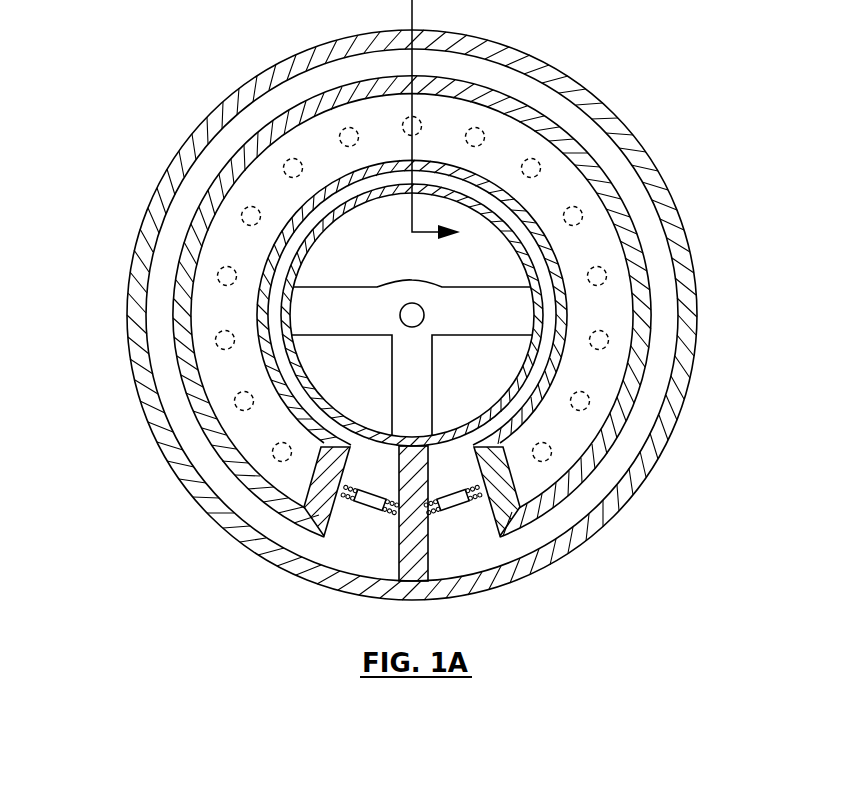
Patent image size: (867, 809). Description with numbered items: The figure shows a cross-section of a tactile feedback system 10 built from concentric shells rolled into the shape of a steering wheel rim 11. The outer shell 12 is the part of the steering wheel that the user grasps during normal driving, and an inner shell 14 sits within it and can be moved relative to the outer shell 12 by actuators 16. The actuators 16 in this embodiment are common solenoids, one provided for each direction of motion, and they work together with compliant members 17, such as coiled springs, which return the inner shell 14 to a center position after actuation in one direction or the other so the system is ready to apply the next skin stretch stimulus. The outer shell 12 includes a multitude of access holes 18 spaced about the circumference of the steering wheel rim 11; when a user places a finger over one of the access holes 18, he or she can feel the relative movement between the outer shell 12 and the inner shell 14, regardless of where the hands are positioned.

The system 10 is at (135, 89).
The steering wheel rim 11 is at (125, 250).
The outer shell 12 is at (673, 202).
The inner shell 14 is at (652, 297).
The actuators 16 is at (365, 506).
The compliant members 17 is at (380, 536).
The access holes 18 is at (540, 163).